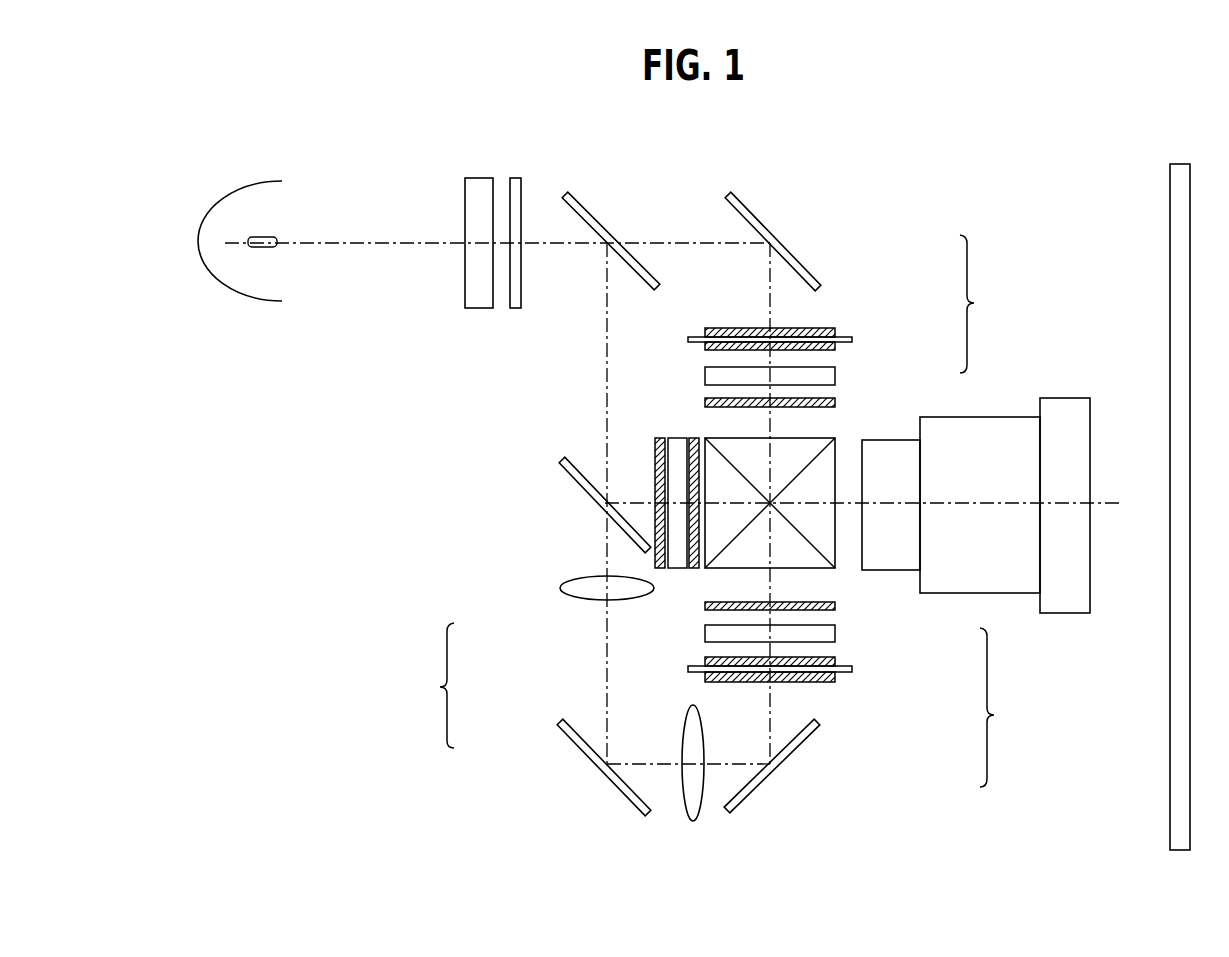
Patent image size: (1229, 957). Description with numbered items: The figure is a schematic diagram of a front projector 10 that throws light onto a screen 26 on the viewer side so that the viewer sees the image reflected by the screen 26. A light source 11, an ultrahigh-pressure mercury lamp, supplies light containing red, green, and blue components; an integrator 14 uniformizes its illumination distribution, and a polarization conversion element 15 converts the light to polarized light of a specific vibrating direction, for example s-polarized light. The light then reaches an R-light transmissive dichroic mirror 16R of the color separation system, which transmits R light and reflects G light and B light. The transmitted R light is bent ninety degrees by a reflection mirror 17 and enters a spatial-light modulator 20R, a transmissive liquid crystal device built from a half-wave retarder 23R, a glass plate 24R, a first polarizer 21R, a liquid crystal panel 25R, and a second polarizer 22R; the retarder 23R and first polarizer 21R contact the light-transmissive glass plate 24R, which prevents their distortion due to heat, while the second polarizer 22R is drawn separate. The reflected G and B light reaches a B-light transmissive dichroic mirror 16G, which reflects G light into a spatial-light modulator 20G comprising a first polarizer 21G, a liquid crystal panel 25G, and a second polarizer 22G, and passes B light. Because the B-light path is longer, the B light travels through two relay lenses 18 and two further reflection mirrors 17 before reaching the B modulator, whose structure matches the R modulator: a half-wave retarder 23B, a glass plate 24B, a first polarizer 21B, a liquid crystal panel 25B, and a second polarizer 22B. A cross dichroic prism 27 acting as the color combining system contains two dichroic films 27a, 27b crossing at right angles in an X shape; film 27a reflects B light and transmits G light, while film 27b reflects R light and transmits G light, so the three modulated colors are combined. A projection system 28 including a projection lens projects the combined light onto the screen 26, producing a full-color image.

The projector 10 is at (841, 154).
The light source 11 is at (237, 291).
The integrator 14 is at (476, 178).
The polarization conversion element 15 is at (515, 178).
The R-light transmissive dichroic mirror 16R is at (595, 218).
The B-light transmissive dichroic mirror 16G is at (573, 477).
The reflection mirror 17 is at (752, 215).
The relay lens 18 is at (560, 589).
The spatial-light modulator 20R is at (1002, 511).
The spatial-light modulator 20G is at (421, 685).
The first polarizer 21R is at (838, 346).
The first polarizer 21G is at (694, 568).
The first polarizer 21B is at (838, 661).
The second polarizer 22R is at (838, 402).
The second polarizer 22G is at (660, 568).
The second polarizer 22B is at (838, 606).
The λ/2-retarder 23R is at (838, 330).
The λ/2-retarder 23B is at (838, 680).
The glass plate 24R is at (852, 340).
The glass plate 24B is at (855, 669).
The liquid crystal panel 25R is at (838, 376).
The liquid crystal panel 25G is at (677, 568).
The liquid crystal panel 25B is at (838, 633).
The screen 26 is at (1178, 164).
The cross dichroic prism 27 is at (766, 499).
The dichroic film 27a is at (820, 450).
The dichroic film 27b is at (722, 458).
The projection system 28 is at (1068, 613).